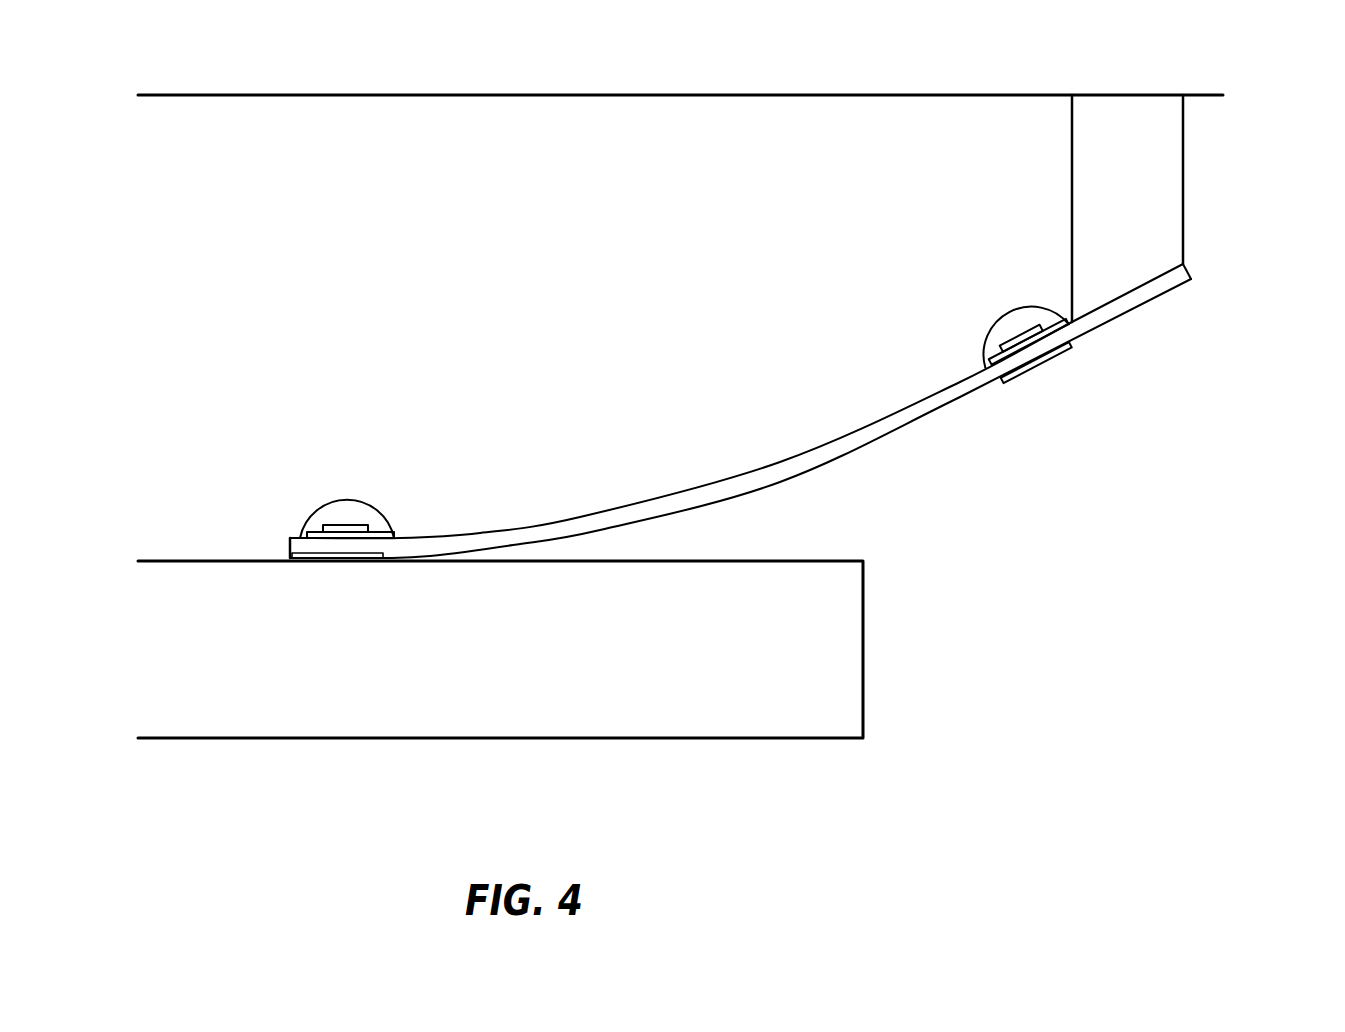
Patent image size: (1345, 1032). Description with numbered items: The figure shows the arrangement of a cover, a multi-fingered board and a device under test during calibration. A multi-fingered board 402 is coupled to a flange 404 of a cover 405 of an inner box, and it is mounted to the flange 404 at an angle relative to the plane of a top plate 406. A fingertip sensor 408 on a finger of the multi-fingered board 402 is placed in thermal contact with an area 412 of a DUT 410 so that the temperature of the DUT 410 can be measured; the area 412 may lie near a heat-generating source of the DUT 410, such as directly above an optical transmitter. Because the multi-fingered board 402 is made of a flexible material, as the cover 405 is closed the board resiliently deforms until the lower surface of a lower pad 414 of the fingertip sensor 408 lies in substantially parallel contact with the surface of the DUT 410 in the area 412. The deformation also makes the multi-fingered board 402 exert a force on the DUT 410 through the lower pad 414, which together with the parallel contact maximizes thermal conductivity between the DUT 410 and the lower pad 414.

The multi-fingered board 402 is at (710, 482).
The flange 404 is at (1072, 210).
The cover 405 is at (1208, 150).
The top plate 406 is at (658, 97).
The fingertip sensor 408 is at (402, 495).
The DUT 410 is at (863, 648).
The area 412 is at (403, 568).
The lower pad 414 is at (287, 558).